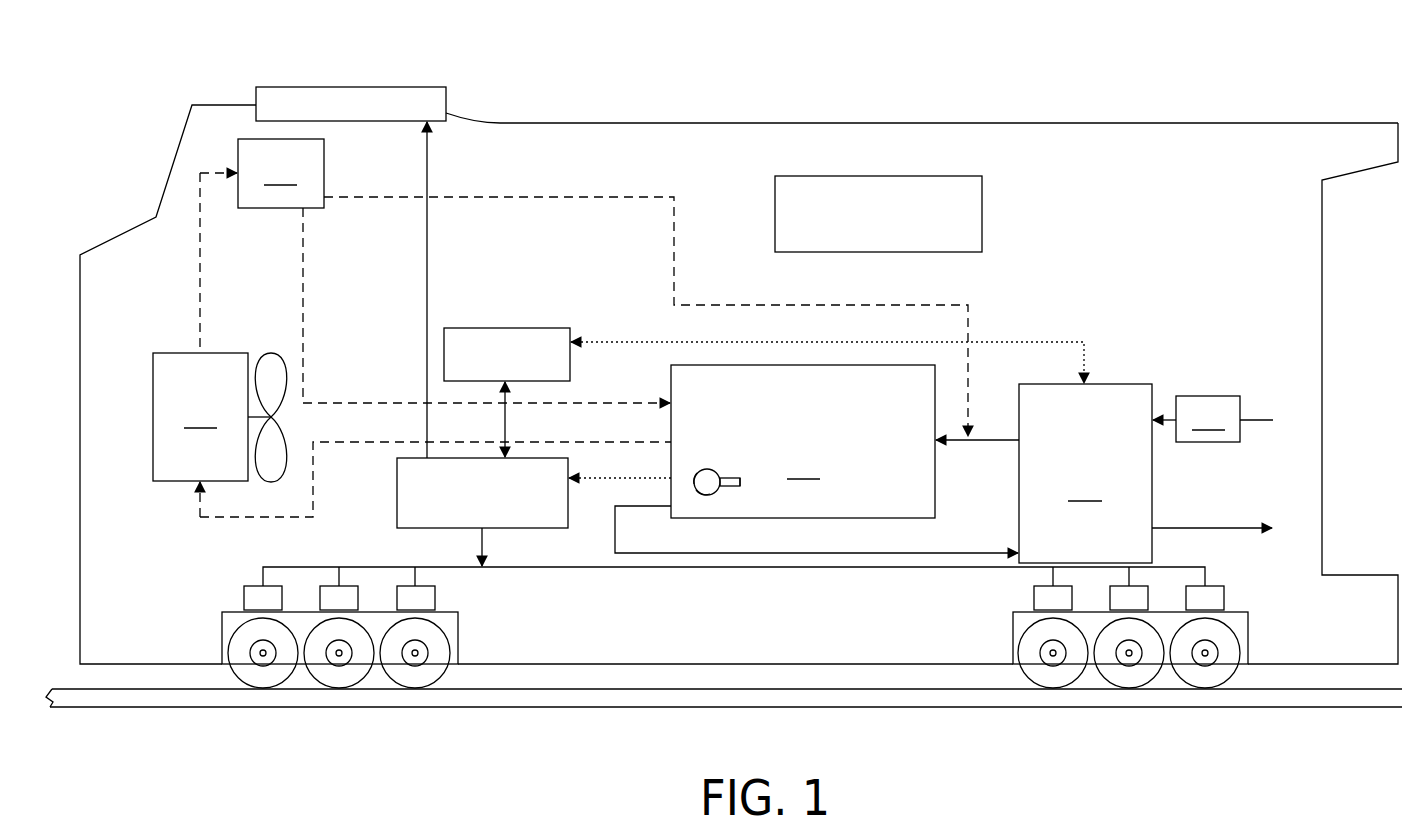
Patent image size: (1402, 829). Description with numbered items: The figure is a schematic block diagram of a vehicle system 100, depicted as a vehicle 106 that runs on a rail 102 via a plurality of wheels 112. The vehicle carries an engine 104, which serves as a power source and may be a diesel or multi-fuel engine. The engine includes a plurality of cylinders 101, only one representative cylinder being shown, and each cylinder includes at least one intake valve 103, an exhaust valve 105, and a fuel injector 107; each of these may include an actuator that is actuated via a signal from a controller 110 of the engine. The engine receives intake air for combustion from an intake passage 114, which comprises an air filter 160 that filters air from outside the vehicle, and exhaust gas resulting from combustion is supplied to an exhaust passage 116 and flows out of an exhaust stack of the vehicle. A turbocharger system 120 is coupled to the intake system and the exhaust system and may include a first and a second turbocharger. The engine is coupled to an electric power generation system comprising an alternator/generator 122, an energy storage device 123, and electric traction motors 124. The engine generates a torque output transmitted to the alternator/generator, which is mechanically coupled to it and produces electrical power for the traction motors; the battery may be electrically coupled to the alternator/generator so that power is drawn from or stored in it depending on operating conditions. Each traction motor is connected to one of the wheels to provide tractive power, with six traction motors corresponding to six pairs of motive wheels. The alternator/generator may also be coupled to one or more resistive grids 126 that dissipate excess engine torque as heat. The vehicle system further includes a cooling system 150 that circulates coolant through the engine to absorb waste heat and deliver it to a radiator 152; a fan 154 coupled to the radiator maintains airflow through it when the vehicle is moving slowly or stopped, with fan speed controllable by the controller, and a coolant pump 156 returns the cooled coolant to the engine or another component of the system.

The vehicle system 100 is at (1219, 58).
The cylinder 101 is at (714, 471).
The rail 102 is at (1322, 708).
The intake valve 103 is at (698, 472).
The engine 104 is at (845, 441).
The exhaust valve 105 is at (701, 494).
The vehicle 106 is at (1052, 123).
The fuel injector 107 is at (733, 486).
The controller 110 is at (983, 190).
The wheels 112 is at (441, 646).
The intake passage 114 is at (1257, 418).
The exhaust passage 116 is at (632, 508).
The turbocharger system 120 is at (1085, 473).
The alternator/generator 122 is at (397, 500).
The energy storage device 123 is at (506, 328).
The electric traction motors 124 is at (436, 598).
The resistive grids 126 is at (428, 87).
The cooling system 150 is at (553, 328).
The radiator 152 is at (200, 417).
The fan 154 is at (278, 352).
The coolant pump 156 is at (281, 173).
The air filter 160 is at (1196, 419).